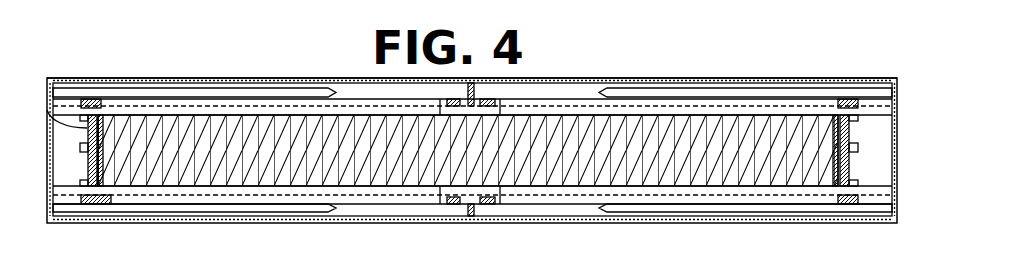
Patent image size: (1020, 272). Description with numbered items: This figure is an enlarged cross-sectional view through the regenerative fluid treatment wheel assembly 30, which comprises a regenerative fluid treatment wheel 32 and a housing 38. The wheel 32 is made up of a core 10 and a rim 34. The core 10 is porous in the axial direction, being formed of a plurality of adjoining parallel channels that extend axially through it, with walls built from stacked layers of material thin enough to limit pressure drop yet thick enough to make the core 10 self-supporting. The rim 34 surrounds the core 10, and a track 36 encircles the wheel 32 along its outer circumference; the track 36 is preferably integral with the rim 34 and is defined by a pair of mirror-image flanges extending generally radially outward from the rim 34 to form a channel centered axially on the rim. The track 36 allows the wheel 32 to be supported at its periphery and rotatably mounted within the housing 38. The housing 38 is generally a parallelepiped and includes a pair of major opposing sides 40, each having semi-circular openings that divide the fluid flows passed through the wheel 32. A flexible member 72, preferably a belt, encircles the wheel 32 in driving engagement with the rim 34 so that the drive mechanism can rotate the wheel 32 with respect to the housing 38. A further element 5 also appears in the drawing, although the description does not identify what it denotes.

The heat exchanger assembly 5 is at (506, 78).
The core 10 is at (656, 128).
The regenerative fluid treatment wheel assembly 30 is at (258, 66).
The regenerative fluid treatment wheel 32 is at (738, 108).
The rim 34 is at (103, 101).
The track 36 is at (860, 130).
The housing 38 is at (897, 227).
The major opposing sides 40 is at (70, 100).
The flexible member 72 is at (47, 110).